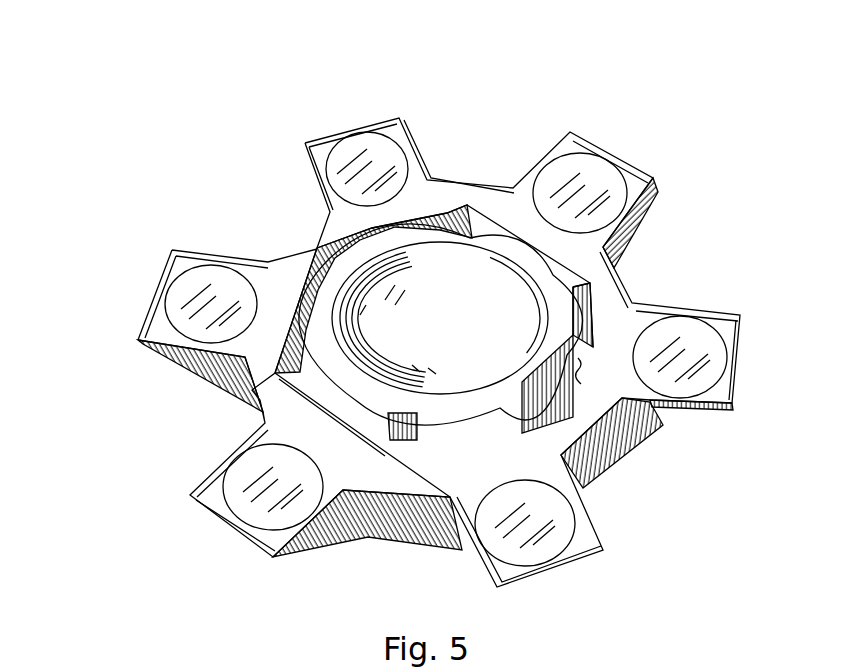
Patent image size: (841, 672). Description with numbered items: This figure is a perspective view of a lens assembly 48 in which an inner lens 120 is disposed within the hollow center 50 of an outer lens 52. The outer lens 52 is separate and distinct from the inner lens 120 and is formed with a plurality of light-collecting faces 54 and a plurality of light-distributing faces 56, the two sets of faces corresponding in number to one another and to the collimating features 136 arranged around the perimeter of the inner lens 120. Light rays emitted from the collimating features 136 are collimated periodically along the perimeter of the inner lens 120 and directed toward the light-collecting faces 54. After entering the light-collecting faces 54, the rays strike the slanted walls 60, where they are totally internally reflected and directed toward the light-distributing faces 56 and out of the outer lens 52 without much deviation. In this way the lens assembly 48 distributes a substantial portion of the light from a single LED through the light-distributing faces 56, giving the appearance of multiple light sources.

The lens assembly 48 is at (244, 91).
The hollow center 50 is at (580, 373).
The outer lens 52 is at (292, 240).
The light-collecting faces 54 is at (440, 210).
The light-distributing faces 56 is at (358, 163).
The slanted walls 60 is at (628, 237).
The inner lens 120 is at (458, 303).
The collimating features 136 is at (500, 243).